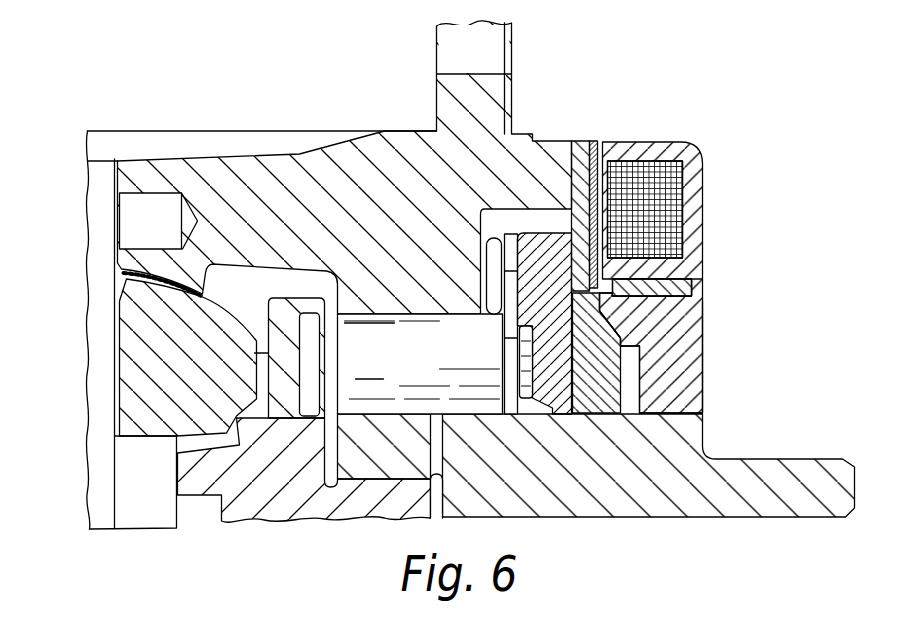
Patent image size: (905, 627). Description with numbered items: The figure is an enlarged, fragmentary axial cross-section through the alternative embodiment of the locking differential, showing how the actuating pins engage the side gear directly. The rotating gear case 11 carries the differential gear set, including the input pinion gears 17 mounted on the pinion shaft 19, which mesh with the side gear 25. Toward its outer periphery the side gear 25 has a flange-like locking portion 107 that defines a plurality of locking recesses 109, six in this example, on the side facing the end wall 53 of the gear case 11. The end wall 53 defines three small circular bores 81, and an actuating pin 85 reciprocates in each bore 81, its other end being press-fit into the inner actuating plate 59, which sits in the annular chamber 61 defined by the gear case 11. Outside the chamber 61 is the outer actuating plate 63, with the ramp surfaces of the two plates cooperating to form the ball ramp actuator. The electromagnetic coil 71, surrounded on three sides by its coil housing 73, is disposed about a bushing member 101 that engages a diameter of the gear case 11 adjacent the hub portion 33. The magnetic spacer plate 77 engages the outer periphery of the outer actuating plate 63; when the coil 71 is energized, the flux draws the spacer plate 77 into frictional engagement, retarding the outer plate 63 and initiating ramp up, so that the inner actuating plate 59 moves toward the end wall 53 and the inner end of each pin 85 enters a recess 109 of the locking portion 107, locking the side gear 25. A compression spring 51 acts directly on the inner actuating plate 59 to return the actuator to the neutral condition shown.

The gear case 11 is at (334, 178).
The input pinion gears 17 is at (160, 408).
The pinion shaft 19 is at (100, 430).
The side gear 25 is at (300, 487).
The annular hub portion 33 is at (807, 457).
The coil compression spring 51 is at (545, 218).
The end wall 53 is at (404, 248).
The inner actuating plate 59 is at (553, 377).
The annular chamber 61 is at (586, 176).
The outer actuating plate 63 is at (598, 387).
The electromagnetic coil 71 is at (657, 188).
The coil housing 73 is at (693, 230).
The spacer plate 77 is at (593, 141).
The circular bores 81 is at (398, 316).
The actuating pin 85 is at (420, 364).
The bushing member 101 is at (670, 317).
The locking portion 107 is at (297, 307).
The locking recesses 109 is at (310, 358).